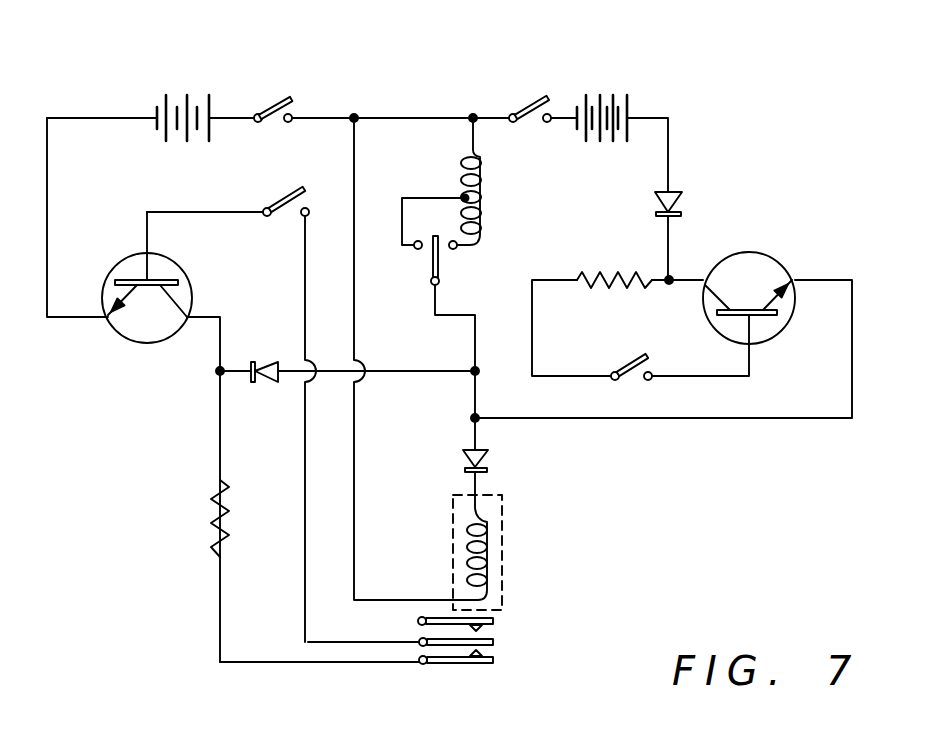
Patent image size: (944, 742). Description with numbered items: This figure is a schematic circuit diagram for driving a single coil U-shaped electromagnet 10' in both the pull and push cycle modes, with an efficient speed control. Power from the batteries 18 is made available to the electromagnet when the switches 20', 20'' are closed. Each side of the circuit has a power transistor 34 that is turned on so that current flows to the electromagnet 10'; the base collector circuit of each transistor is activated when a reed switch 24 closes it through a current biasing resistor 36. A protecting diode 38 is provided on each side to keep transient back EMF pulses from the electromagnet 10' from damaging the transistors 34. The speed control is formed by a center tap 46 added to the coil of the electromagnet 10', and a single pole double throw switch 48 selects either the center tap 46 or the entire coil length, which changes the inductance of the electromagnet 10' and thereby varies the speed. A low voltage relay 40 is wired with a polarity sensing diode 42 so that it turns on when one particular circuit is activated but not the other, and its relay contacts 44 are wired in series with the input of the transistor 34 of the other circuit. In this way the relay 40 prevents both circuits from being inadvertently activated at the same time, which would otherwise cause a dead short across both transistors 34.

The batteries 18 is at (187, 102).
The switch 20' is at (257, 82).
The switch 20'' is at (495, 80).
The reed switch 24 is at (293, 197).
The power transistor 34 is at (158, 327).
The current biasing resistor 36 is at (217, 527).
The protecting diode 38 is at (268, 388).
The U-shaped electromagnet 10' is at (520, 193).
The center tap 46 is at (465, 198).
The SPDT switch 48 is at (432, 262).
The polarity sensing diode 42 is at (487, 462).
The low voltage relay 40 is at (487, 573).
The relay contacts 44 is at (497, 653).